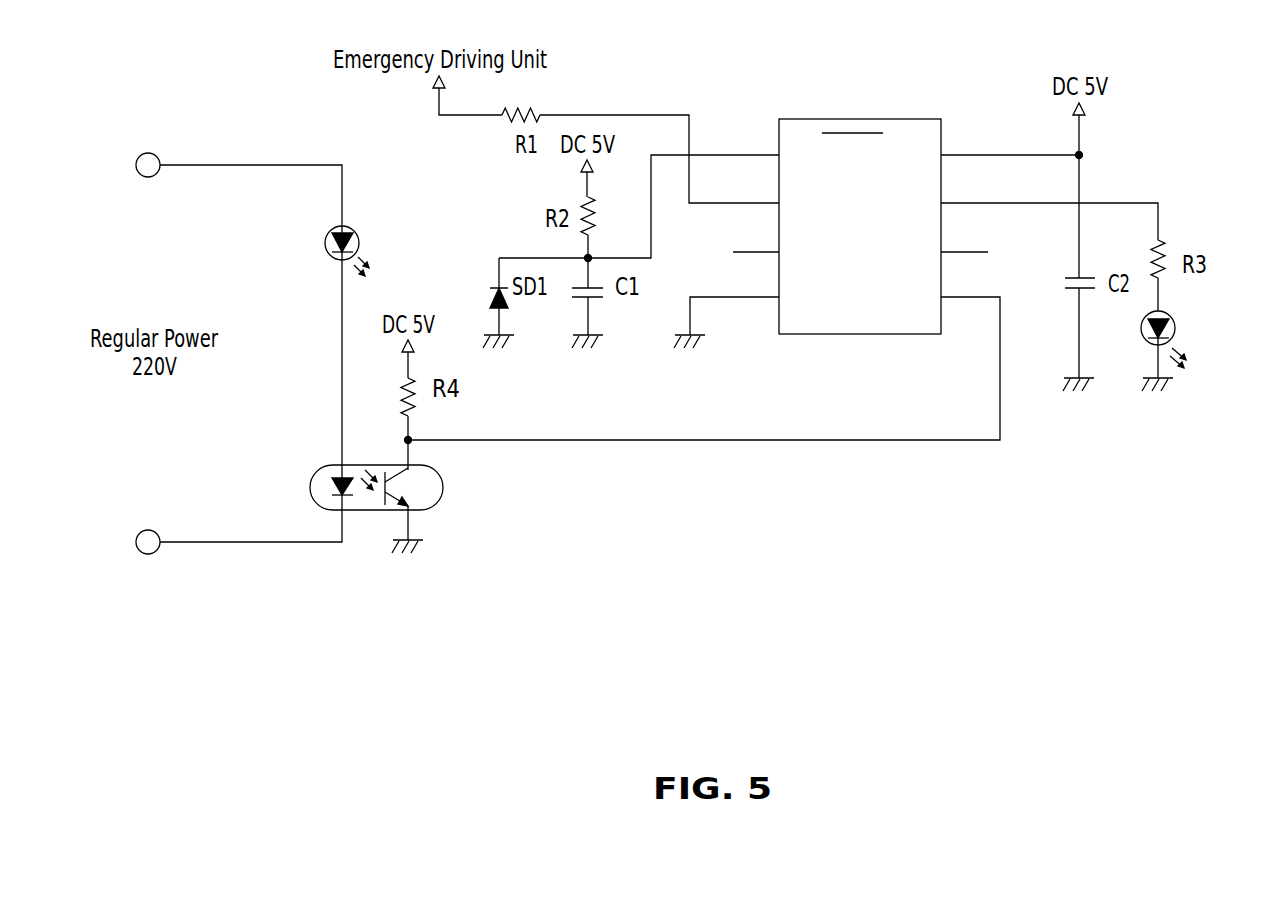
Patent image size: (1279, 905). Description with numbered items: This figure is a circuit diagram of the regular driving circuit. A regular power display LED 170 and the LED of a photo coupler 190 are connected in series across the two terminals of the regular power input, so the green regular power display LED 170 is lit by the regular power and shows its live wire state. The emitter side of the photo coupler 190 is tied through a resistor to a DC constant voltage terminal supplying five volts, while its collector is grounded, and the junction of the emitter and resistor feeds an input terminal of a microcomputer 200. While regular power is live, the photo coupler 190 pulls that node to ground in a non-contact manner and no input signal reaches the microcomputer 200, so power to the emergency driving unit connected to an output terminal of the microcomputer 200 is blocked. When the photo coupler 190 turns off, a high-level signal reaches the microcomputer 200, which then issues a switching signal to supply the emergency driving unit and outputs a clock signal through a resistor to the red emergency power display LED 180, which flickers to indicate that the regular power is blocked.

The regular power display LED 170 is at (356, 231).
The emergency power display LED 180 is at (1172, 313).
The photo coupler 190 is at (365, 512).
The microcomputer 200 is at (813, 336).